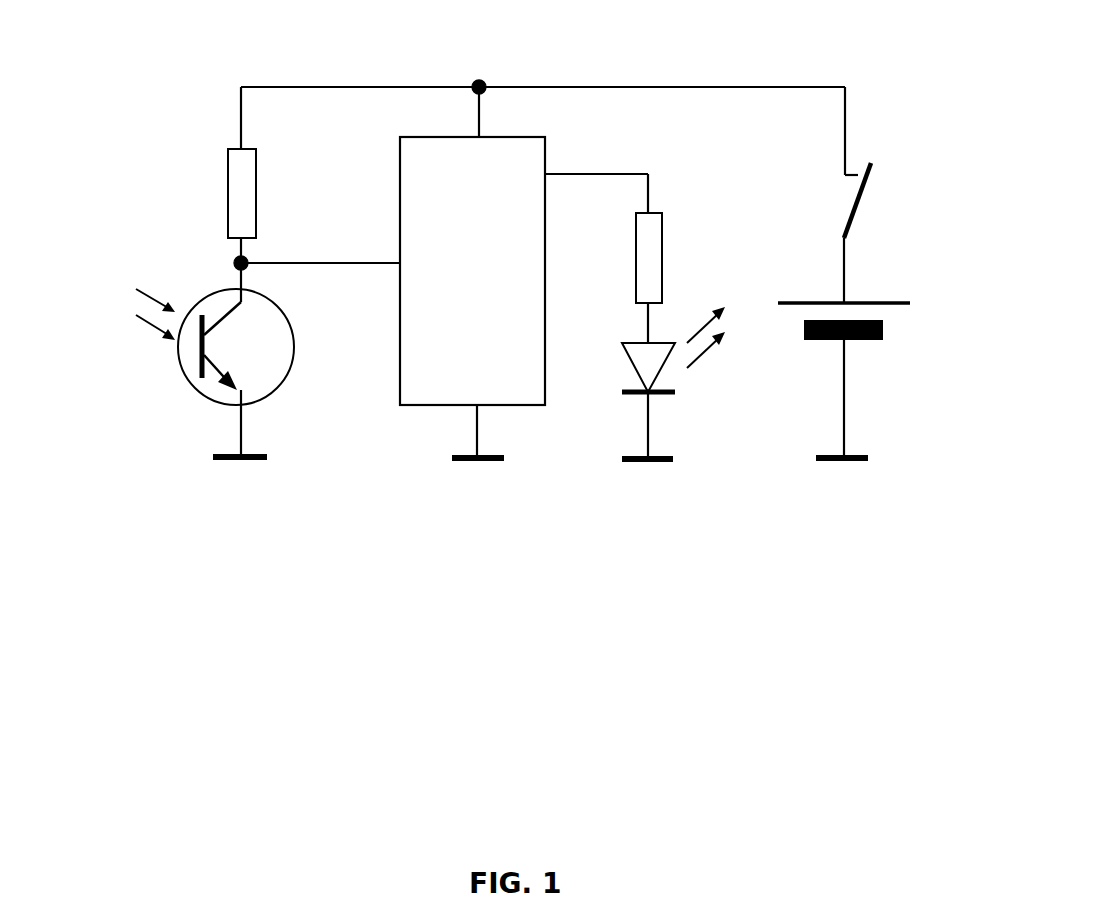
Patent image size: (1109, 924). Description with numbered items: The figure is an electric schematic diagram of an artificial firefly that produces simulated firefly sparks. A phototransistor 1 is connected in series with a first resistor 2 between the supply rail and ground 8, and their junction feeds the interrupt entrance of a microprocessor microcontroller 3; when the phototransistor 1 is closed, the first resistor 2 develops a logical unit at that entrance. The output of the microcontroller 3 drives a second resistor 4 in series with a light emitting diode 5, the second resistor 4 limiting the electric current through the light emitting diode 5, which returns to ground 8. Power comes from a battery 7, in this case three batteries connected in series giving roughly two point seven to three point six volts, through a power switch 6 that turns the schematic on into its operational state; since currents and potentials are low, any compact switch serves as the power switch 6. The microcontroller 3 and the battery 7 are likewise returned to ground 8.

The phototransistor 1 is at (187, 391).
The resistor 2 is at (228, 209).
The microprocessor microcontroller 3 is at (449, 135).
The resistor 4 is at (630, 230).
The light emitting diode 5 is at (628, 382).
The power switch 6 is at (842, 200).
The battery 7 is at (825, 348).
The ground 8 is at (252, 462).